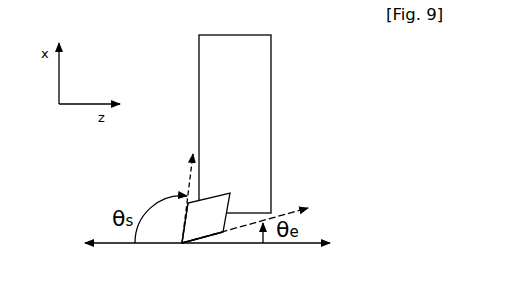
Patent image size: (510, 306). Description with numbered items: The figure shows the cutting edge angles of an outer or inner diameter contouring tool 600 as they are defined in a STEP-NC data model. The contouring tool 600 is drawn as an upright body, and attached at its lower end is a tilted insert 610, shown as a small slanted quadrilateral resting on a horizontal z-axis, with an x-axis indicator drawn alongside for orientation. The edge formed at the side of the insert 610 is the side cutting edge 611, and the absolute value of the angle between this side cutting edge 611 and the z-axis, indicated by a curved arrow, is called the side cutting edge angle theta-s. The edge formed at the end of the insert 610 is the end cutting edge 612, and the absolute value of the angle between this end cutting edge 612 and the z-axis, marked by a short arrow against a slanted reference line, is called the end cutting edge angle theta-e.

The outer or inner diameter contouring tool 600 is at (288, 112).
The insert 610 is at (207, 199).
The side cutting edge 611 is at (181, 223).
The end cutting edge 612 is at (210, 239).